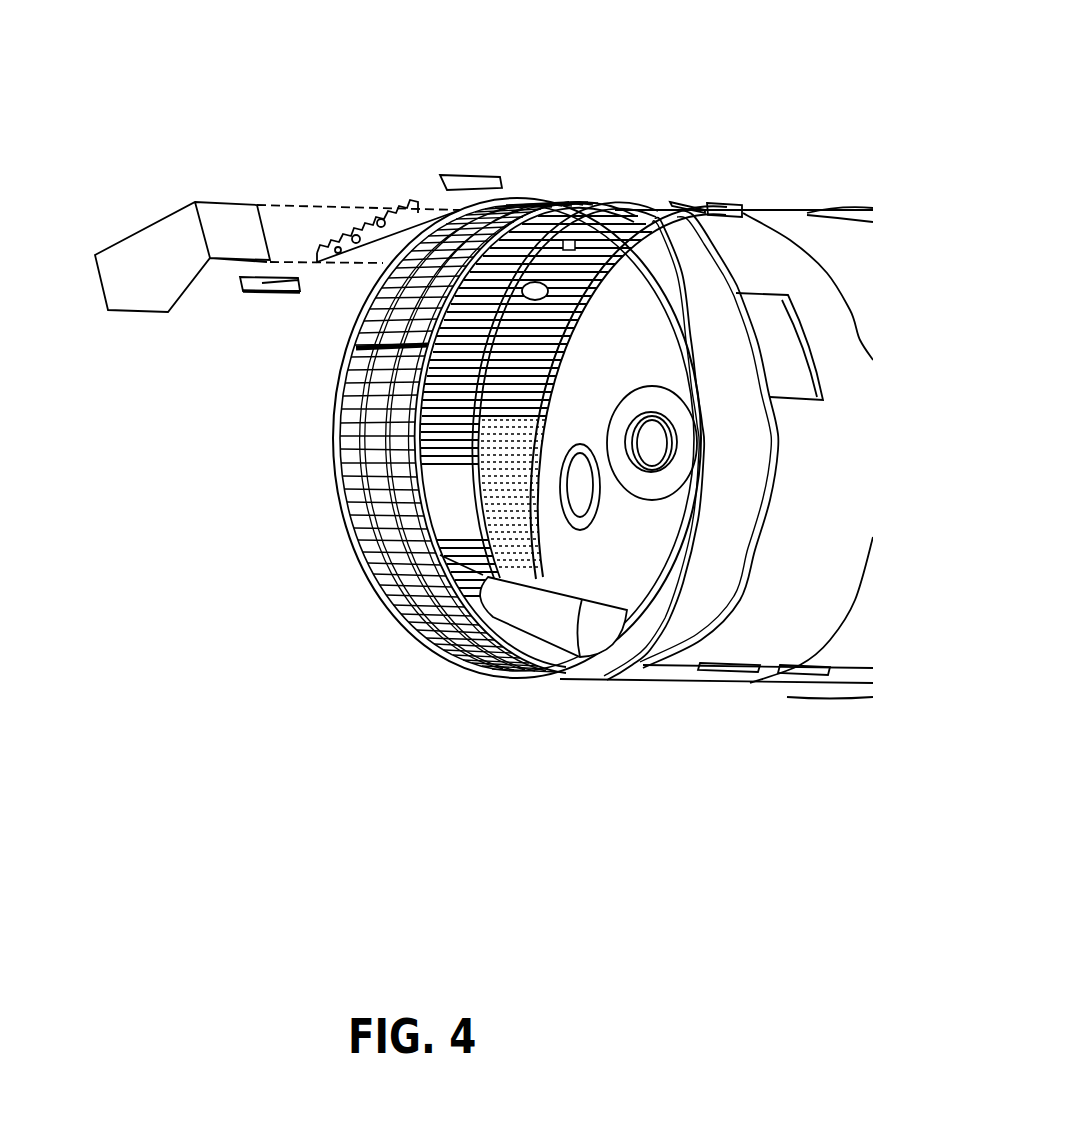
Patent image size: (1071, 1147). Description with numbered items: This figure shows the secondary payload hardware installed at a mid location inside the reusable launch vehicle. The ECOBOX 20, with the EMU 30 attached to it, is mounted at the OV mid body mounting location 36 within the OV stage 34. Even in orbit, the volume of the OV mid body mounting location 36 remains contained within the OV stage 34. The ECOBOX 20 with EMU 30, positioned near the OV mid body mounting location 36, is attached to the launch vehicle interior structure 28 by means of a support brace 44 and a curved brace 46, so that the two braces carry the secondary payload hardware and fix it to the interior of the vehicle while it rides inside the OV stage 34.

The ECOBOX 20 is at (162, 258).
The launch vehicle interior structure 28 is at (470, 492).
The EMU 30 is at (582, 236).
The OV stage 34 is at (683, 680).
The OV mid body mounting location 36 is at (598, 228).
The support brace 44 is at (258, 298).
The curved brace 46 is at (372, 232).